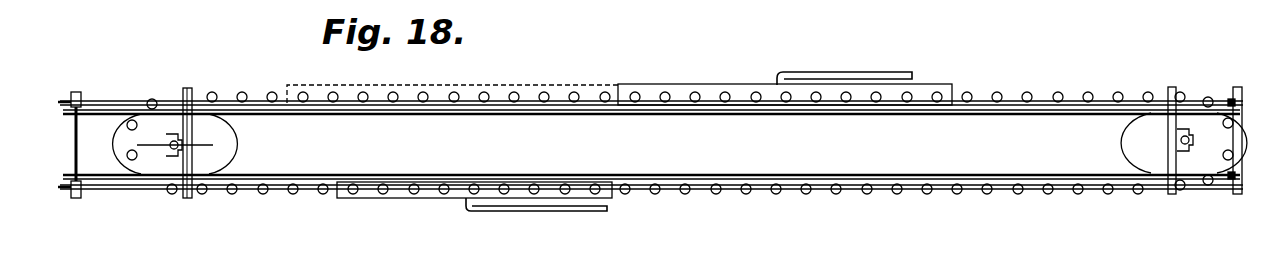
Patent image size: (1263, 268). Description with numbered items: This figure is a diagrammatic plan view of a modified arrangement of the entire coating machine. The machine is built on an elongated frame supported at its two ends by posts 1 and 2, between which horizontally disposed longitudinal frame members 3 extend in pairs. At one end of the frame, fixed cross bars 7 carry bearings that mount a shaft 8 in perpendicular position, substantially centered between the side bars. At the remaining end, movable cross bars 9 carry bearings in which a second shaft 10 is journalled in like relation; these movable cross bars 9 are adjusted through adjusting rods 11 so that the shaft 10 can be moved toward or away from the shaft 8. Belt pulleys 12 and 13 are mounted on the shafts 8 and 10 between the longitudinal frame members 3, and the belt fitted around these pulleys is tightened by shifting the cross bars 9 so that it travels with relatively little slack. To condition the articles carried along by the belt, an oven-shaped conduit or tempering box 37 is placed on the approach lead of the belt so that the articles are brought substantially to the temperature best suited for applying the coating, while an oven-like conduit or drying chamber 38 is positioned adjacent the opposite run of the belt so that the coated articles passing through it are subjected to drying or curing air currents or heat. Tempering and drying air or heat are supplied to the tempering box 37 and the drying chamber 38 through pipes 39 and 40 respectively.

The post 1 is at (83, 104).
The post 2 is at (1232, 100).
The longitudinal frame member 3 is at (490, 106).
The fixed cross bar 7 is at (1169, 195).
The shaft 8 is at (1190, 140).
The movable cross bar 9 is at (190, 143).
The shaft 10 is at (137, 146).
The adjusting rod 11 is at (123, 191).
The belt pulley 12 is at (1147, 139).
The belt pulley 13 is at (207, 163).
The tempering box 37 is at (431, 196).
The drying chamber 38 is at (680, 90).
The pipe 39 is at (546, 213).
The pipe 40 is at (840, 72).